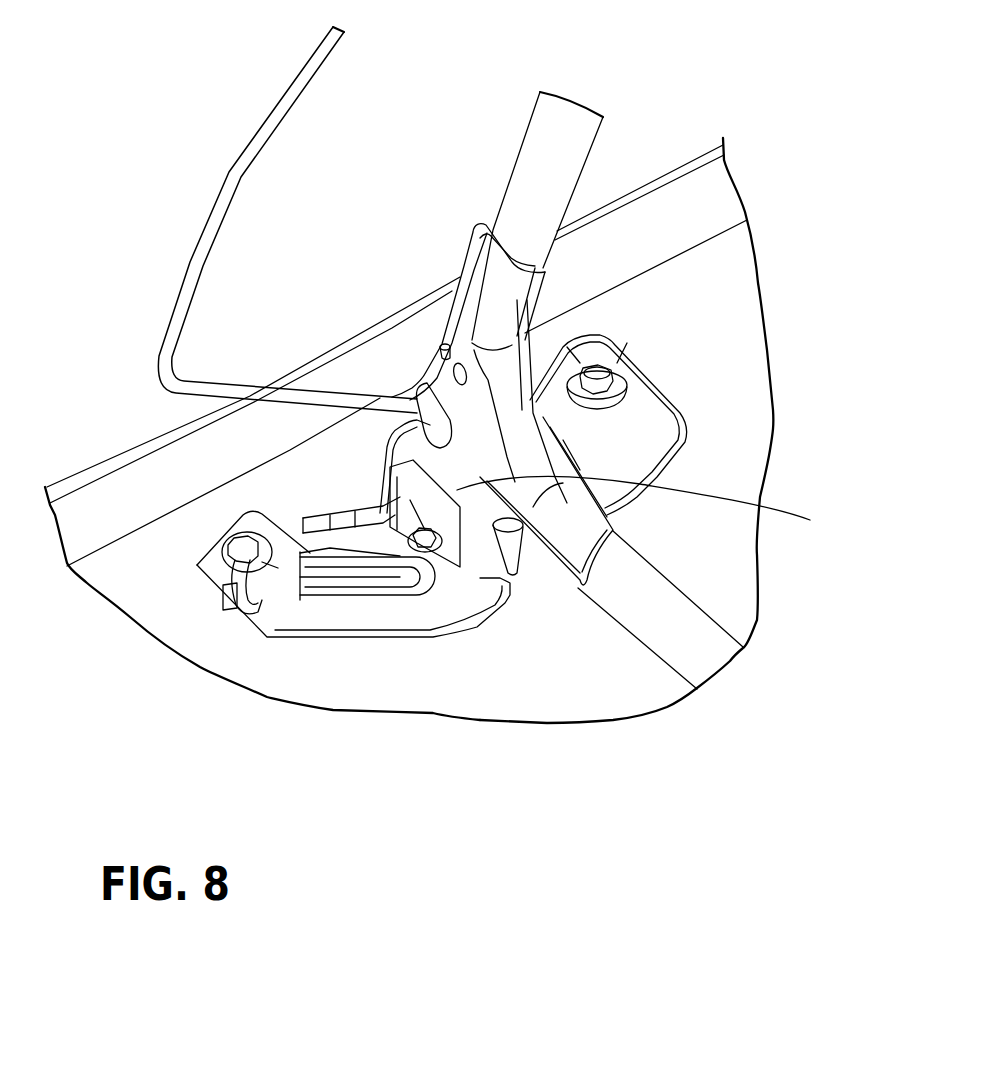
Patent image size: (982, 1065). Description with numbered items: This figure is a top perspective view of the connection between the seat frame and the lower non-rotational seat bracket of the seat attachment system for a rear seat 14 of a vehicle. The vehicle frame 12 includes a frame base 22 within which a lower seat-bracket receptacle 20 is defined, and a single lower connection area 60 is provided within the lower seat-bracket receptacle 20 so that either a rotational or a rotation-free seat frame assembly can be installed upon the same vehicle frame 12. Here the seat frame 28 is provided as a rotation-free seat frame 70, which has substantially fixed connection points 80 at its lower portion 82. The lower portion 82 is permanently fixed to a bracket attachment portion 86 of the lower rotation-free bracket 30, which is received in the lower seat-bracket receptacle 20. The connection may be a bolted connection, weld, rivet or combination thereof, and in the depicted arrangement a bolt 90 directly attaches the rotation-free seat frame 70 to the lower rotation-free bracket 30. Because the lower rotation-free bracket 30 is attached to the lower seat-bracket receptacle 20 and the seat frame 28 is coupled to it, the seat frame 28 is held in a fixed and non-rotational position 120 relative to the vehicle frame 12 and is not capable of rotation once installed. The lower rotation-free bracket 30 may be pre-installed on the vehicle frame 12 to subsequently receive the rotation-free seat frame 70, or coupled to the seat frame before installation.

The vehicle frame 12 is at (688, 156).
The rear seat 14 is at (598, 153).
The lower seat-bracket receptacle 20 is at (302, 652).
The frame base 22 is at (120, 494).
The seat frame 28 is at (518, 141).
The lower rotation-free bracket 30 is at (647, 460).
The lower connection area 60 is at (490, 630).
The rotation-free seat frame 70 is at (521, 203).
The fixed connection point 80 is at (464, 550).
The lower portion 82 is at (652, 505).
The bracket attachment portion 86 is at (406, 506).
The bolt 90 is at (400, 533).
The fixed and non-rotational position 120 is at (668, 366).